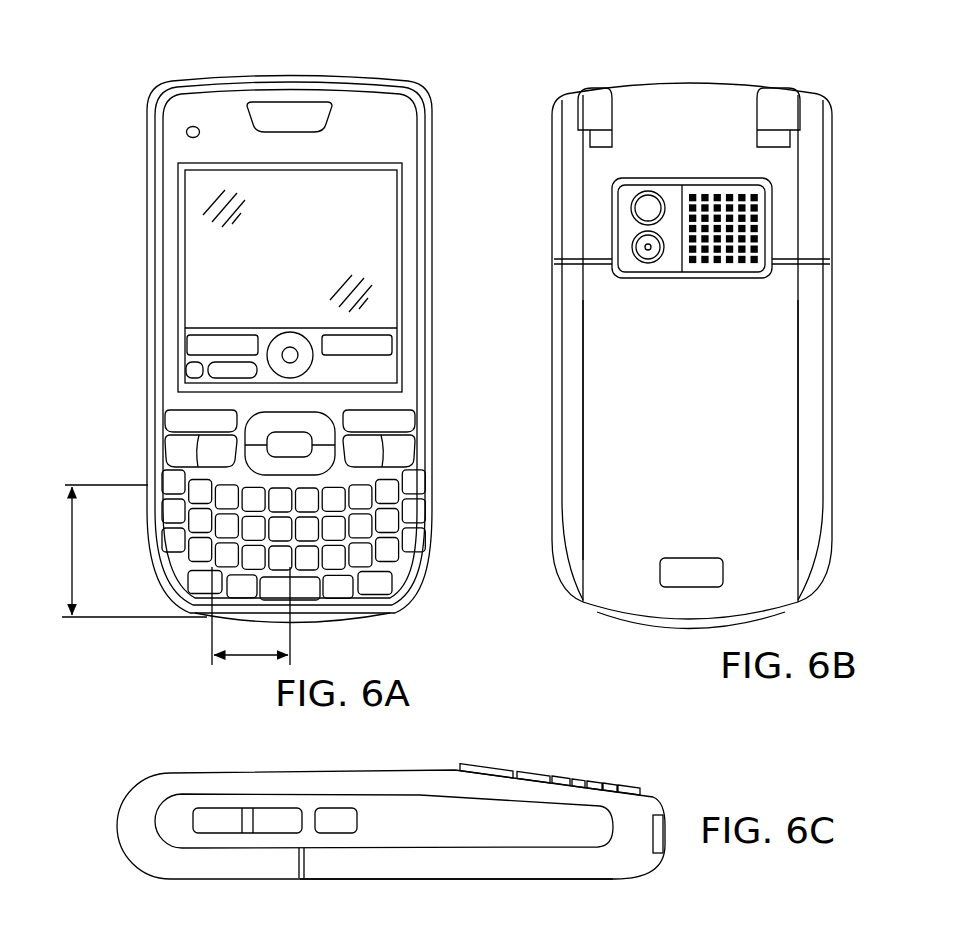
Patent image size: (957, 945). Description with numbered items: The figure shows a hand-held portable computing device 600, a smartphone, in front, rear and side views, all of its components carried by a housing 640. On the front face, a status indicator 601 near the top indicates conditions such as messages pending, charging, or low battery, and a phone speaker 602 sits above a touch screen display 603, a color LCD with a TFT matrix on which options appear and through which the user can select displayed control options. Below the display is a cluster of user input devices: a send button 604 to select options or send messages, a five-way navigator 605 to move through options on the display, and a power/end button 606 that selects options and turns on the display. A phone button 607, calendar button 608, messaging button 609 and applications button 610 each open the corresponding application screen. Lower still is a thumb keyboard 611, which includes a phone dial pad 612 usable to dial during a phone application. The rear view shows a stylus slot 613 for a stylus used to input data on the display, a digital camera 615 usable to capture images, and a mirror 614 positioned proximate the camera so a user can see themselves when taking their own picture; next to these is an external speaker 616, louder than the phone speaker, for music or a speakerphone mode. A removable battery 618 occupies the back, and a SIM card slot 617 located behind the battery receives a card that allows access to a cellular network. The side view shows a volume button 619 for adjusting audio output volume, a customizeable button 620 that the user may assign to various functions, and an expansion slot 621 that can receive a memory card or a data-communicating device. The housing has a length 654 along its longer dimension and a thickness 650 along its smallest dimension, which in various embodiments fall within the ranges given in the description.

In FIG. 6A, the hand-held portable computing device 600 is at (108, 325).
In FIG. 6A, the status indicator 601 is at (182, 122).
In FIG. 6A, the phone speaker 602 is at (288, 98).
In FIG. 6A, the touch screen display 603 is at (280, 253).
In FIG. 6A, the send button 604 is at (198, 408).
In FIG. 6A, the 5-way navigator 605 is at (315, 433).
In FIG. 6A, the power/end button 606 is at (388, 407).
In FIG. 6A, the phone button 607 is at (163, 454).
In FIG. 6A, the calendar button 608 is at (227, 472).
In FIG. 6A, the messaging button 609 is at (355, 472).
In FIG. 6A, the applications button 610 is at (412, 457).
In FIG. 6A, the thumb keyboard 611 is at (65, 552).
In FIG. 6A, the phone dial pad 612 is at (252, 662).
In FIG. 6B, the stylus slot 613 is at (582, 85).
In FIG. 6B, the mirror 614 is at (622, 206).
In FIG. 6B, the digital camera 615 is at (633, 263).
In FIG. 6B, the external speaker 616 is at (767, 225).
In FIG. 6B, the SIM card slot 617 is at (773, 513).
In FIG. 6B, the removable battery 618 is at (688, 590).
In FIG. 6C, the volume button 619 is at (247, 838).
In FIG. 6C, the customizeable button 620 is at (338, 837).
In FIG. 6C, the expansion slot 621 is at (412, 944).
In FIG. 6B, the housing 640 is at (545, 597).
In FIG. 6C, the thickness 650 is at (685, 780).
In FIG. 6C, the length 654 is at (233, 892).